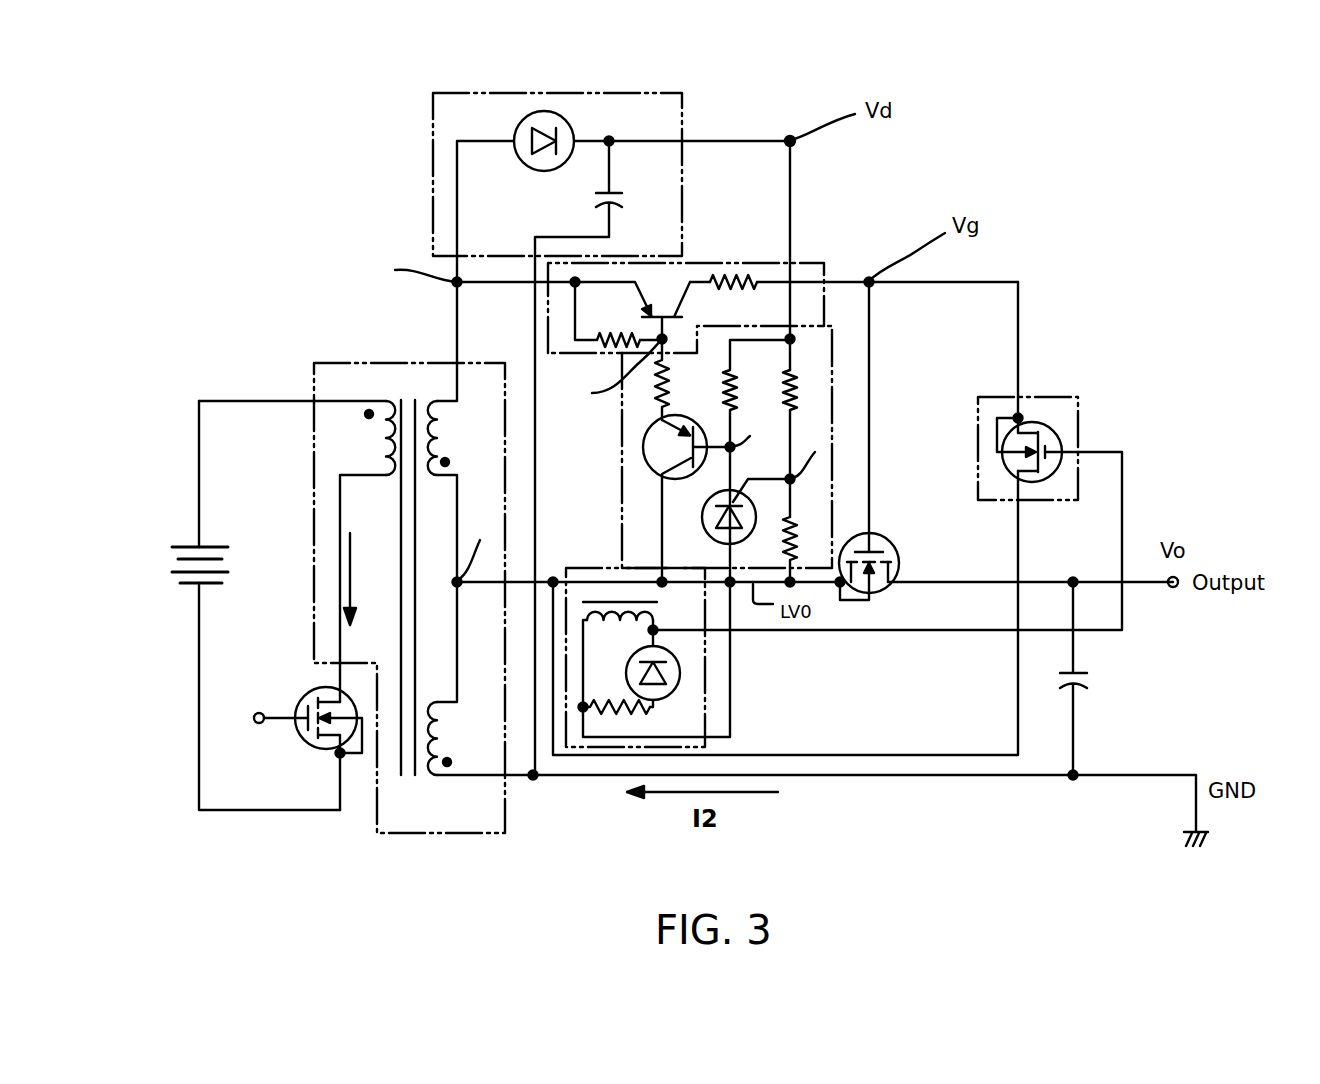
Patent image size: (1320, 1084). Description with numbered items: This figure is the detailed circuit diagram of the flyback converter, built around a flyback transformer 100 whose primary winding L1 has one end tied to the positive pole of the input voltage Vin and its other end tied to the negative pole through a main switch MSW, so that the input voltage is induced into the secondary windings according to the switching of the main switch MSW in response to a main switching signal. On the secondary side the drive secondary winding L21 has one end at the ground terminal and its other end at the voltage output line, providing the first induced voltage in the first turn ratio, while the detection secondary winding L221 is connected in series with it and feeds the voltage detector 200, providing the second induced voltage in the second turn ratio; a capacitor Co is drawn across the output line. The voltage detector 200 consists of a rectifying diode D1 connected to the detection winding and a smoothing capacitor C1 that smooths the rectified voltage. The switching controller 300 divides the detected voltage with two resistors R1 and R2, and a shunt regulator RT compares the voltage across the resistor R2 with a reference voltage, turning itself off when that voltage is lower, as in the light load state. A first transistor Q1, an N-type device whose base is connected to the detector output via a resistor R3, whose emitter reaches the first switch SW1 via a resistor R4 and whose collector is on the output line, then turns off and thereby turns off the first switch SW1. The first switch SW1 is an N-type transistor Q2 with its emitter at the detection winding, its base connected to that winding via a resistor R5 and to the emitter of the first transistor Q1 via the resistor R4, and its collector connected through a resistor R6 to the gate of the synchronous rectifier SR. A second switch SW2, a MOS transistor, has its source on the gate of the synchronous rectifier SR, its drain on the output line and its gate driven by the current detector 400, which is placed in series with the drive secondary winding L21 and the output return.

The flyback transformer 100 is at (355, 363).
The voltage detector 200 is at (682, 116).
The switching controller 300 is at (832, 363).
The current detector 400 is at (705, 708).
The first switch SW1 is at (808, 263).
The second switch SW2 is at (1067, 397).
The synchronous rectifier SR is at (1006, 566).
The main switch MSW is at (305, 692).
The rectifying diode D1 is at (526, 141).
The smoothing capacitor C1 is at (578, 456).
The first transistor Q1 is at (680, 498).
The N-type transistor Q2 is at (660, 296).
The resistor R1 is at (805, 443).
The resistor R2 is at (805, 549).
The resistor R3 is at (756, 415).
The resistor R4 is at (677, 379).
The resistor R5 is at (617, 313).
The resistor R6 is at (864, 298).
The shunt regulator RT is at (738, 530).
The primary winding L1 is at (297, 551).
The drive secondary winding L21 is at (480, 678).
The auxiliary secondary winding L221 is at (461, 432).
The output capacitor Co is at (1090, 678).
The input voltage Vin is at (231, 605).